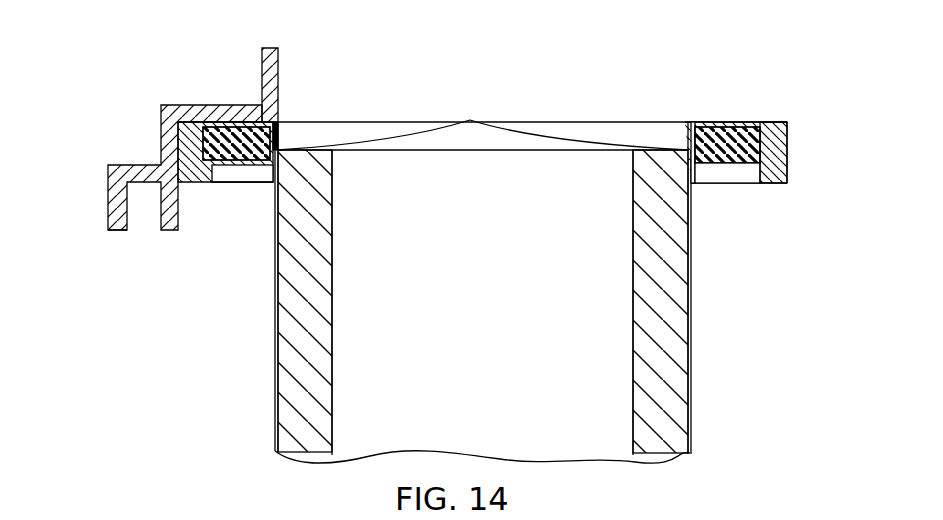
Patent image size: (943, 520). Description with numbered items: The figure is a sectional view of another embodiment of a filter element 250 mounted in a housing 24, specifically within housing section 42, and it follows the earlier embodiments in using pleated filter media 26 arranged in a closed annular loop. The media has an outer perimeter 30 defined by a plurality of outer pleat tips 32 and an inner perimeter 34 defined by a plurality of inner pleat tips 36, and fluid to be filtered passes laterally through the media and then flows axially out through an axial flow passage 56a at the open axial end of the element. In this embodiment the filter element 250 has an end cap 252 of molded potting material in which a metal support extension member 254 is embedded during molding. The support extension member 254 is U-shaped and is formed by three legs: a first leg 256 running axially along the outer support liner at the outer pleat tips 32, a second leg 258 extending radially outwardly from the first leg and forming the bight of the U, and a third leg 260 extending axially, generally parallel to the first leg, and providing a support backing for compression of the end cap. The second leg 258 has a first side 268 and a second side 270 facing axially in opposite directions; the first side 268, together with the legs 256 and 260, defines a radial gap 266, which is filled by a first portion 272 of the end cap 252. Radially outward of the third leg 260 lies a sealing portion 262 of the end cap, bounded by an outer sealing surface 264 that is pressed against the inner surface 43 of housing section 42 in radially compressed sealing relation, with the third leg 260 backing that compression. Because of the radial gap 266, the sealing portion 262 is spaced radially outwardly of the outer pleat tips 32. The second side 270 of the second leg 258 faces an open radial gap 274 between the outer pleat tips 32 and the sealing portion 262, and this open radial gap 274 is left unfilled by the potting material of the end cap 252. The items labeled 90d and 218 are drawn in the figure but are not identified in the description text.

The housing 24 is at (162, 105).
The pleated filter media 26 is at (291, 418).
The outer perimeter 30 is at (691, 430).
The outer pleat tips 32 is at (691, 392).
The inner perimeter 34 is at (633, 428).
The inner pleat tips 36 is at (632, 392).
The housing section 42 is at (108, 199).
The inner surface of housing section 43 is at (180, 137).
The axial flow passage 56a is at (471, 119).
The bolt 90d is at (276, 66).
The gasket strip 218 is at (283, 149).
The filter element 250 is at (246, 412).
The end cap 252 is at (788, 141).
The metal support extension member 254 is at (790, 167).
The first leg 256 is at (699, 130).
The second leg 258 is at (735, 130).
The third leg 260 is at (771, 127).
The sealing portion 262 is at (770, 185).
The outer sealing surface 264 is at (790, 182).
The radial gap 266 is at (758, 128).
The first side 268 is at (227, 164).
The second side 270 is at (260, 166).
The first portion of end cap 272 is at (248, 122).
The open radial gap 274 is at (720, 178).